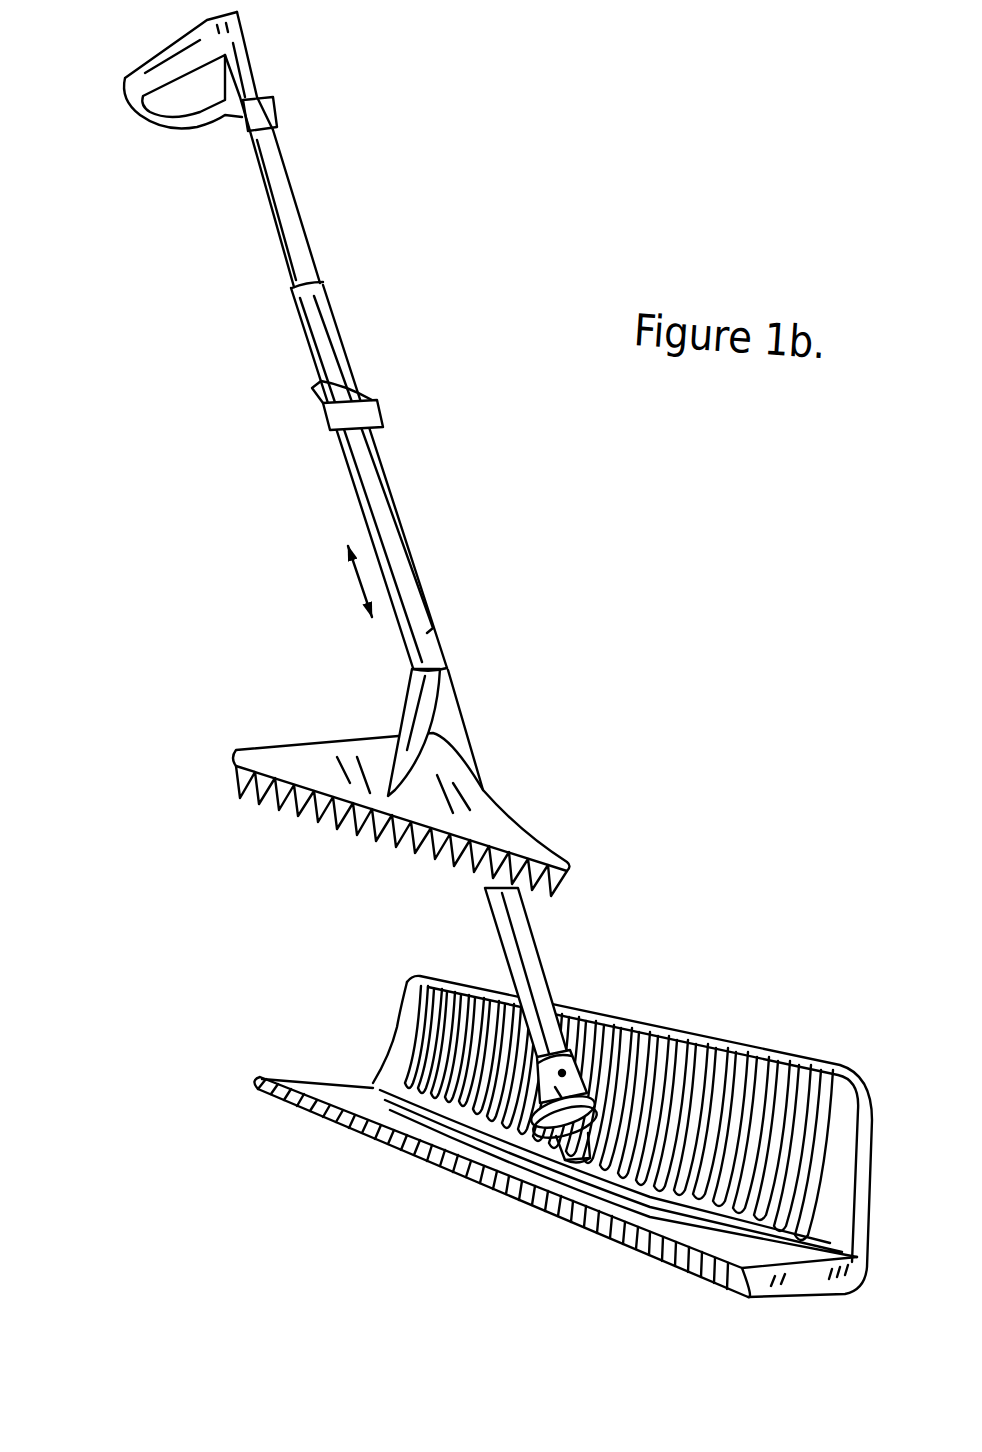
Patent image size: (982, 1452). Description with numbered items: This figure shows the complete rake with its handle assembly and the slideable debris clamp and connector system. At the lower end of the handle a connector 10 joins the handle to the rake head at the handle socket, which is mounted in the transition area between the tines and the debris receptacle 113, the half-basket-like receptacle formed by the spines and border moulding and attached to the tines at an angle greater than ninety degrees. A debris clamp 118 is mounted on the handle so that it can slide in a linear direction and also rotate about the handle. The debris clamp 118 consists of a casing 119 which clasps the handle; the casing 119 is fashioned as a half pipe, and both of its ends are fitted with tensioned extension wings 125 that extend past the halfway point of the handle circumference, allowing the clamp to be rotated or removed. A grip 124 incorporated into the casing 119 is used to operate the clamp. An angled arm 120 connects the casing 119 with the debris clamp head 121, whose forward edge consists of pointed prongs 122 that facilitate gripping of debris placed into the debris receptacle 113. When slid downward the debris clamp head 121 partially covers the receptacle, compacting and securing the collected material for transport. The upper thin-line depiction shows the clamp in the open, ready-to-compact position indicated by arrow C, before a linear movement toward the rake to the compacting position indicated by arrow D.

The connector 10 is at (604, 1135).
The debris receptacle 113 is at (393, 1032).
The debris clamp 118 is at (272, 742).
The casing 119 is at (360, 510).
The angled arm 120 is at (404, 708).
The debris clamp head 121 is at (522, 824).
The pointed prongs 122 is at (352, 842).
The grip 124 is at (323, 418).
The tensioned extension wings 125 is at (328, 286).
The arrow 'C' C is at (225, 790).
The arrow 'D' D is at (395, 1165).